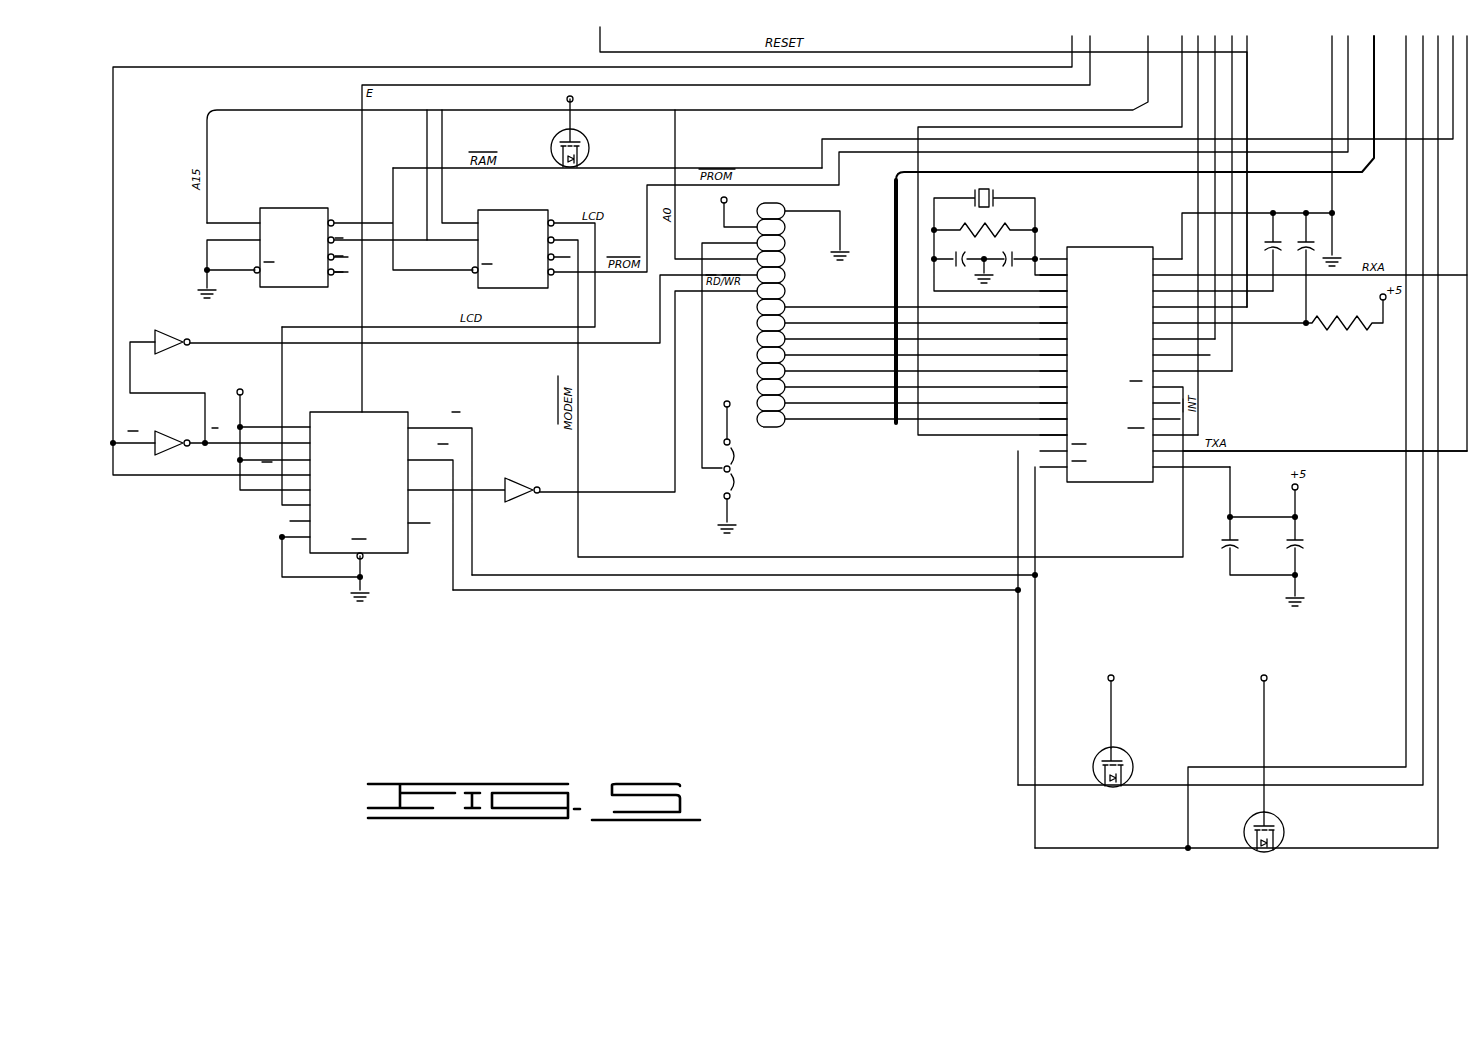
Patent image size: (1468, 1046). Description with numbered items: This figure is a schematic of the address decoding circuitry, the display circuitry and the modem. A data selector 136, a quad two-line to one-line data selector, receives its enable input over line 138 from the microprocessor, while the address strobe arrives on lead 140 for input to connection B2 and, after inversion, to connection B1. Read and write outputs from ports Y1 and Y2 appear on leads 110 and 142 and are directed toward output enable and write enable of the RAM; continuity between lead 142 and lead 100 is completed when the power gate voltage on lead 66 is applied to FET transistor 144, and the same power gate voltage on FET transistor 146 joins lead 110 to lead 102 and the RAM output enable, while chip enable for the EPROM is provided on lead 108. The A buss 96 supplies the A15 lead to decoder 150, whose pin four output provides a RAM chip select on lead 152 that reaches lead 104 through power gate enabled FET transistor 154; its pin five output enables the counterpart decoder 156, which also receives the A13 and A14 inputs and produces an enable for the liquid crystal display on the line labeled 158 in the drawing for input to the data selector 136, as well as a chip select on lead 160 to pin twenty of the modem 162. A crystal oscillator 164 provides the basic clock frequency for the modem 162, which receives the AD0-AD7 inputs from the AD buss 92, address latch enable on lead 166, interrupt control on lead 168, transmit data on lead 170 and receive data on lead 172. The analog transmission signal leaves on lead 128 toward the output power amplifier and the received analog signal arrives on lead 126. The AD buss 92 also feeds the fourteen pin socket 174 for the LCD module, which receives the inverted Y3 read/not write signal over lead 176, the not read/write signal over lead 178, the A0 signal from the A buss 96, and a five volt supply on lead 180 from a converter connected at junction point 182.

The power gate voltage lead 66 is at (575, 99).
The AD buss 92 is at (892, 267).
The A buss 96 is at (324, 108).
The lead 100 is at (1154, 783).
The lead 102 is at (1368, 850).
The lead 104 is at (798, 152).
The chip enable lead 108 is at (647, 190).
The read lead 110 is at (497, 574).
The received analog signal lead 126 is at (1466, 261).
The transmit analog signal lead 128 is at (1278, 449).
The data selector 136 is at (378, 420).
The enable line 138 is at (490, 87).
The address strobe lead 140 is at (508, 64).
The write lead 142 is at (471, 594).
The FET transistor 144 is at (1117, 744).
The FET transistor 146 is at (1285, 820).
The decoder 150 is at (297, 208).
The RAM chip select lead 152 is at (390, 170).
The FET transistor 154 is at (588, 137).
The decoder 156 is at (513, 210).
The LCD select line 158 is at (597, 304).
The chip select lead 160 is at (582, 534).
The modem 162 is at (1107, 240).
The crystal oscillator 164 is at (994, 194).
The address latch enable lead 166 is at (1117, 116).
The interrupt lead 168 is at (1200, 391).
The transmit data lead 170 is at (1236, 372).
The receive data lead 172 is at (1220, 340).
The socket 174 is at (796, 429).
The read/not write lead 176 is at (675, 382).
The not read/write lead 178 is at (605, 344).
The lead 180 is at (702, 359).
The junction point 182 is at (730, 468).